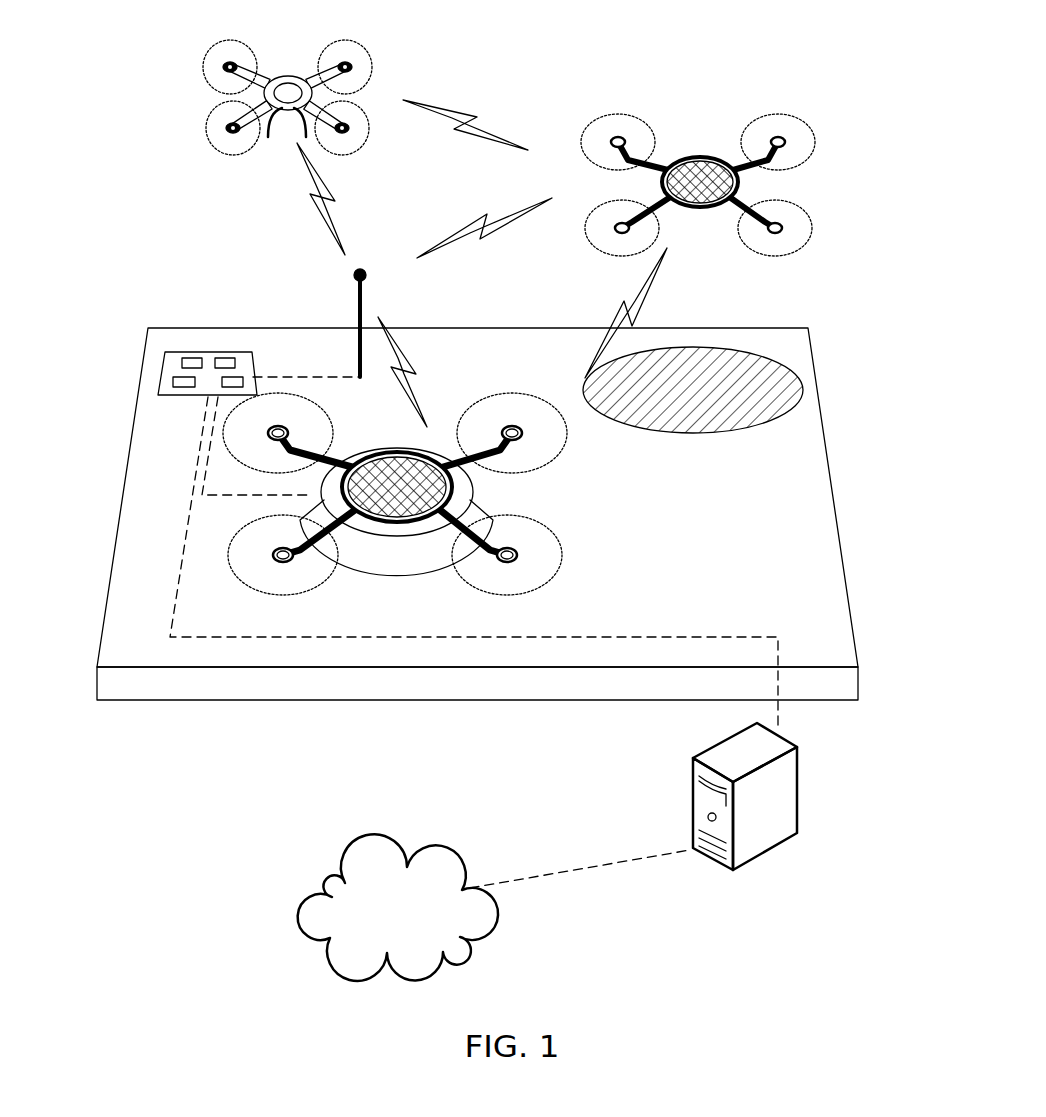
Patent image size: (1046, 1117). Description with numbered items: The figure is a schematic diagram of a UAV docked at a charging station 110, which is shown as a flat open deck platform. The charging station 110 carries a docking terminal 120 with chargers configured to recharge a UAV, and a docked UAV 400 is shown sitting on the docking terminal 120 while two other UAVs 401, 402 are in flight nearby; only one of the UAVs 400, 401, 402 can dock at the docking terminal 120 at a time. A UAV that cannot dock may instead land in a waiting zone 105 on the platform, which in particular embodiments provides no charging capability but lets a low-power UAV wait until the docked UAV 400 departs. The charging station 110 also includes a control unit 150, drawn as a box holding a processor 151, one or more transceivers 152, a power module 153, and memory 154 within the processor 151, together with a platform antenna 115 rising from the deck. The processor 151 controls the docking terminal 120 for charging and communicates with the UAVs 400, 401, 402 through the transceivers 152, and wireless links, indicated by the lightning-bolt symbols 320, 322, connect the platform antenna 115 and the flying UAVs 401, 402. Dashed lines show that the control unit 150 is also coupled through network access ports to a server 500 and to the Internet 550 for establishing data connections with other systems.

The waiting zone 105 is at (762, 422).
The charging station 110 is at (140, 522).
The platform antenna 115 is at (357, 317).
The docking terminal 120 is at (473, 513).
The control unit 150 is at (198, 350).
The processor 151 is at (182, 358).
The transceiver 152 is at (233, 378).
The power module 153 is at (175, 378).
The memory 154 is at (223, 358).
The wireless signal 320 is at (473, 118).
The wireless signal 322 is at (315, 196).
The UAV 400 is at (408, 522).
The UAV 401 is at (700, 157).
The UAV 402 is at (287, 85).
The server 500 is at (797, 781).
The Internet 550 is at (455, 948).